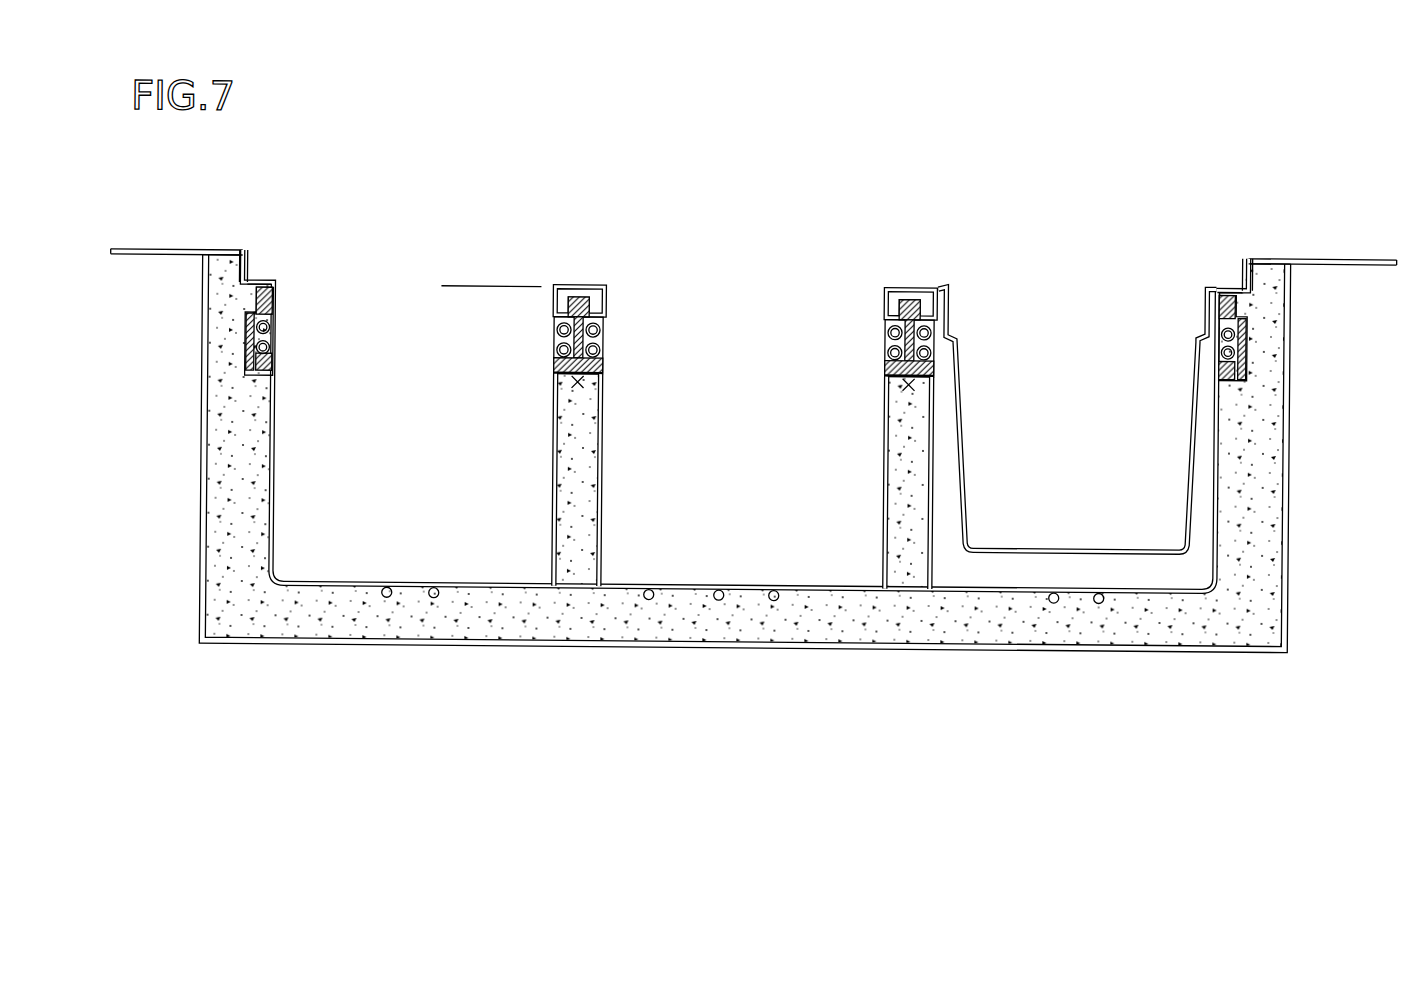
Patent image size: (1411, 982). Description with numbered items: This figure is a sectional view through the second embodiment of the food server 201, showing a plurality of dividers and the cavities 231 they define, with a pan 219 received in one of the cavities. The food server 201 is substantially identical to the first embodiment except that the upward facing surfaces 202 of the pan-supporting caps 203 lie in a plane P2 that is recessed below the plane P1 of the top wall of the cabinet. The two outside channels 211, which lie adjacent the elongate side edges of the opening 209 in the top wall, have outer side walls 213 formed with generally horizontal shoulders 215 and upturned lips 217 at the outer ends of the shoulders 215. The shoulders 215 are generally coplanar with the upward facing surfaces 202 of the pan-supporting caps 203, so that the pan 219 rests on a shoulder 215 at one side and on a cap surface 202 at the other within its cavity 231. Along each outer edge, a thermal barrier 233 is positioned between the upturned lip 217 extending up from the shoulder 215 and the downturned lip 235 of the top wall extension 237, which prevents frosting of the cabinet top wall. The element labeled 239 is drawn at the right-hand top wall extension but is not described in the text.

The food server 201 is at (978, 239).
The upward facing surface 202 is at (577, 286).
The pan-supporting cap 203 is at (882, 305).
The opening 209 is at (264, 266).
The outside channel 211 is at (360, 590).
The outer side wall 213 is at (275, 492).
The shoulder 215 is at (278, 285).
The upturned lip 217 is at (218, 272).
The pan 219 is at (962, 411).
The cavity 231 is at (406, 364).
The thermal barrier 233 is at (234, 258).
The downturned lip 235 is at (258, 272).
The top wall extension 237 is at (132, 260).
The right cover flange 239 is at (1322, 253).
The plane P1 is at (1410, 258).
The plane P2 is at (484, 288).